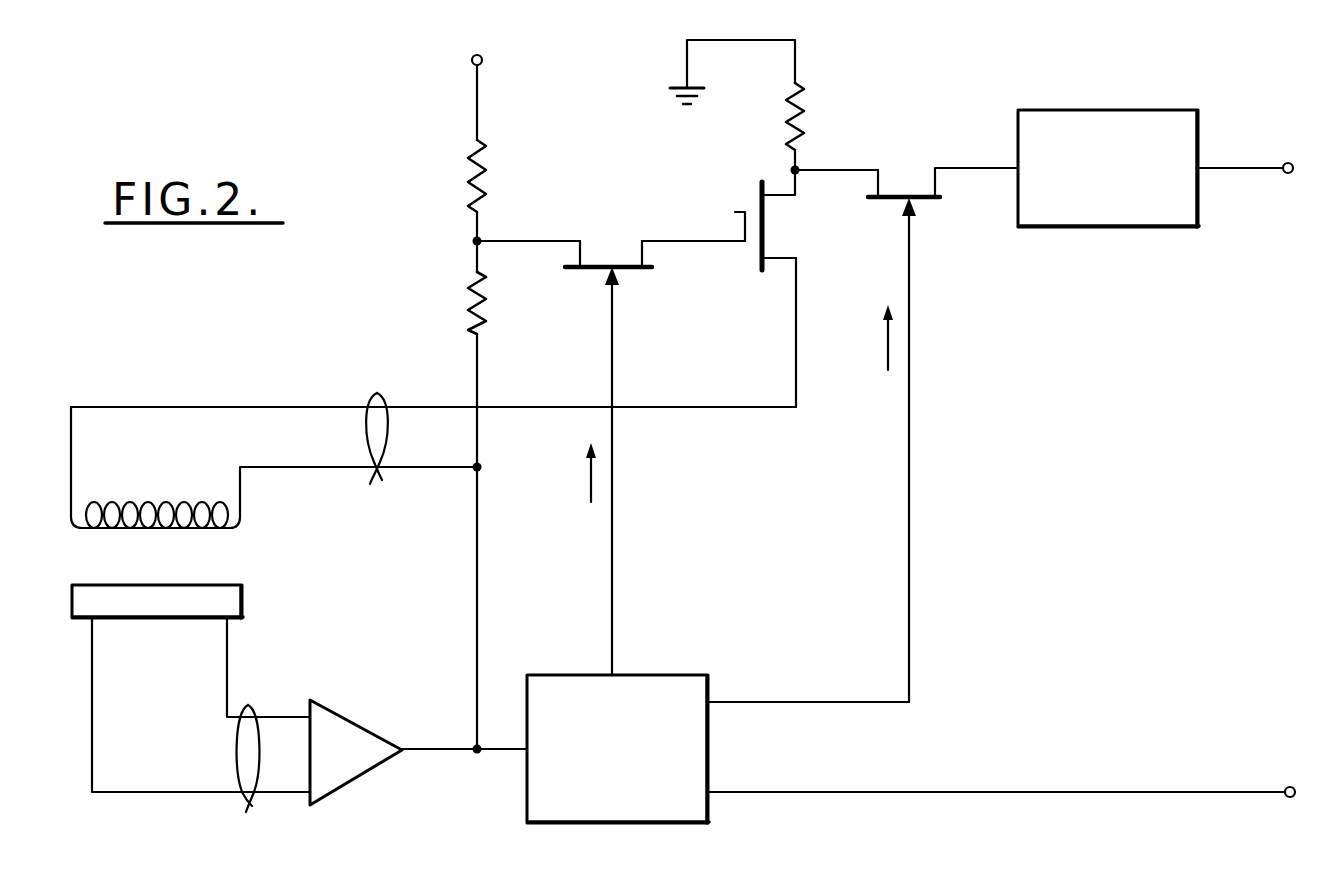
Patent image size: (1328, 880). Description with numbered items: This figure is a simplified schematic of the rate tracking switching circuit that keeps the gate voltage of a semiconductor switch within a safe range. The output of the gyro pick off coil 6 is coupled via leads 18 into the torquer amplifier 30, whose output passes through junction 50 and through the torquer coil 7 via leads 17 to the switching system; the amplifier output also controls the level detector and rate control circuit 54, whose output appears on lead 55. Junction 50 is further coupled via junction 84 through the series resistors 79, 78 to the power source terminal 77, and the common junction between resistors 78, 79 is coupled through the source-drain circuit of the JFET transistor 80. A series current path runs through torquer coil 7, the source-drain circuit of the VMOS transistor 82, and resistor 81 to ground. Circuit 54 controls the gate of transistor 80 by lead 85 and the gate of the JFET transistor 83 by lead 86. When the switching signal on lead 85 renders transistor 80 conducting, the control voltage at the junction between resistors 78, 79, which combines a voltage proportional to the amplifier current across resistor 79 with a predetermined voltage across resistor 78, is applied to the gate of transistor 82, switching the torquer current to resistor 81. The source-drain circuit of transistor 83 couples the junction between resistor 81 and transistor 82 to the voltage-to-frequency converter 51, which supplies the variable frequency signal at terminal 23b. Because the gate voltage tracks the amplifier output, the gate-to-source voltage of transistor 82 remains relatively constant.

The pick off coil 6 is at (118, 584).
The torquer coil 7 is at (198, 530).
The leads 17 is at (370, 449).
The leads 18 is at (247, 769).
The torquer amplifier 30 is at (350, 718).
The junction 50 is at (477, 754).
The voltage-to-frequency converter 51 is at (1107, 110).
The level detector and rate control circuit 54 is at (671, 675).
The lead 55 is at (1216, 790).
The power source terminal 77 is at (472, 60).
The resistor 78 is at (466, 183).
The resistor 79 is at (466, 305).
The JFET transistor 80 is at (640, 270).
The resistor 81 is at (800, 118).
The VMOS transistor 82 is at (765, 218).
The JFET transistor 83 is at (943, 418).
The junction 84 is at (480, 466).
The lead 85 is at (613, 528).
The lead 86 is at (910, 340).
The terminal 23b is at (1289, 163).